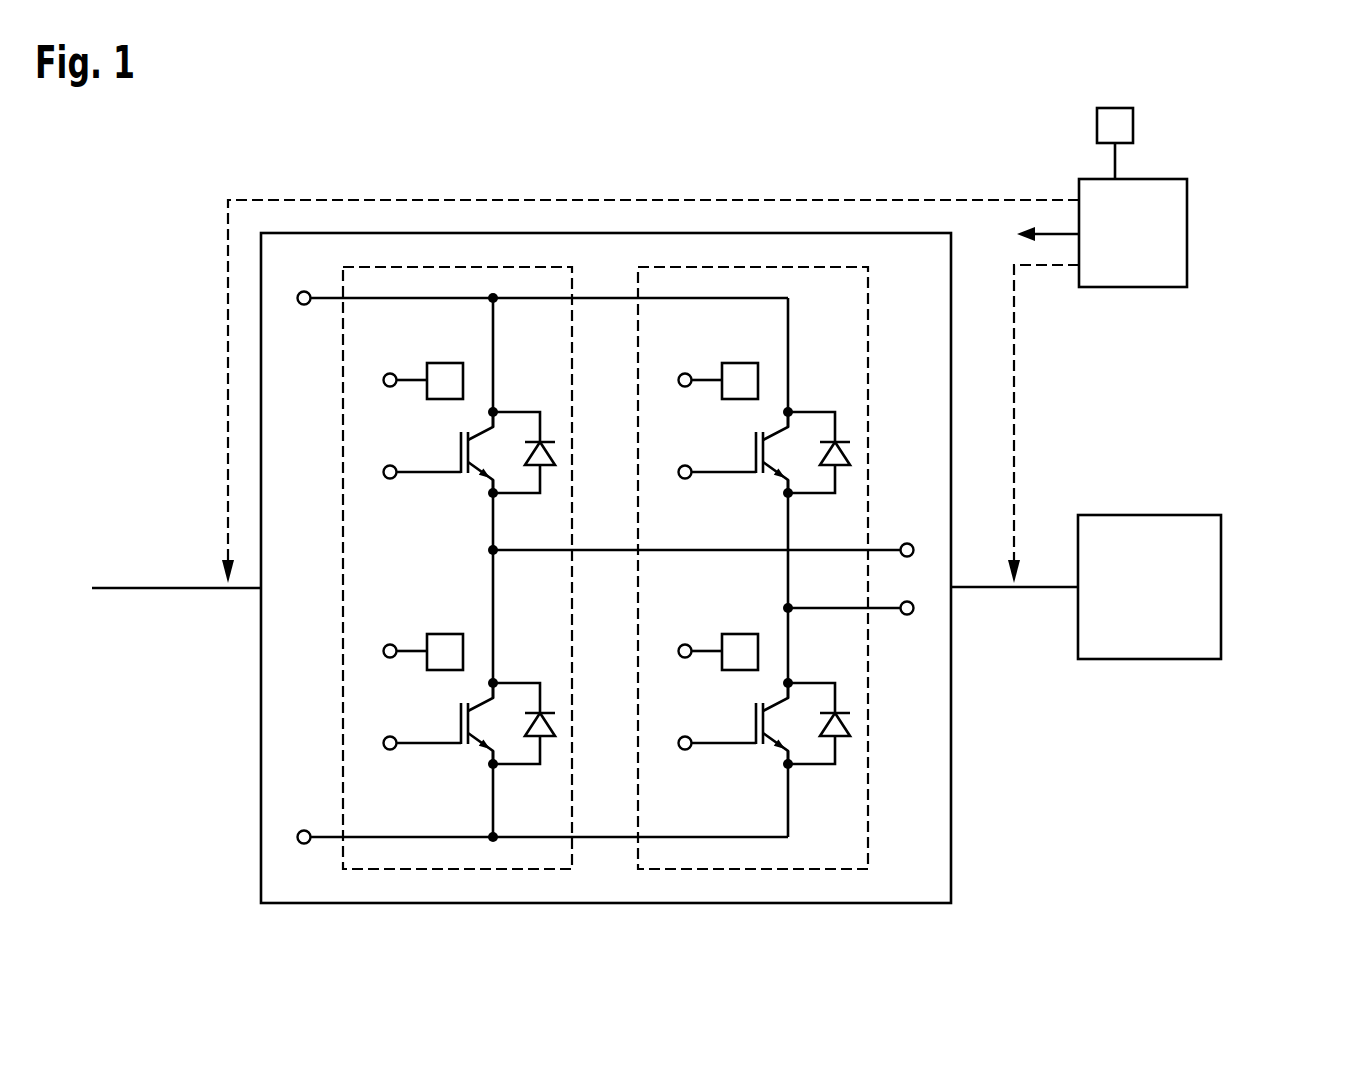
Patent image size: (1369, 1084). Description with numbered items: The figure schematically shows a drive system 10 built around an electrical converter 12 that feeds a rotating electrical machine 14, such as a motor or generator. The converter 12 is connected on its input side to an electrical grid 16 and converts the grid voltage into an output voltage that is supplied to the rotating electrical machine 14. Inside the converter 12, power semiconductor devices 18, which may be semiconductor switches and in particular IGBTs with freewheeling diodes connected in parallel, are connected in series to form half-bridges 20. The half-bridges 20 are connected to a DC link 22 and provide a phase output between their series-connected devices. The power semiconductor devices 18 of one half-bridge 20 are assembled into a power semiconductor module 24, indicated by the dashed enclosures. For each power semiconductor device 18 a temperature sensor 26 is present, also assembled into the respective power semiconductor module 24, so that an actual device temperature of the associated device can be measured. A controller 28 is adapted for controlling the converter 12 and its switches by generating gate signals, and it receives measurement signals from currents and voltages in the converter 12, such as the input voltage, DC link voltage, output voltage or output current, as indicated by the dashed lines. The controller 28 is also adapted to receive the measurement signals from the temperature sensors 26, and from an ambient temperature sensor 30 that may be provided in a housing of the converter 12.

The drive system 10 is at (1278, 137).
The electrical converter 12 is at (261, 877).
The rotating electrical machine 14 is at (1221, 588).
The electrical grid 16 is at (161, 590).
The power semiconductor devices 18 is at (445, 453).
The half-bridges 20 is at (526, 862).
The DC link 22 is at (282, 731).
The power semiconductor module 24 is at (372, 870).
The temperature sensor 26 is at (447, 363).
The controller 28 is at (1187, 235).
The ambient temperature sensor 30 is at (1097, 123).